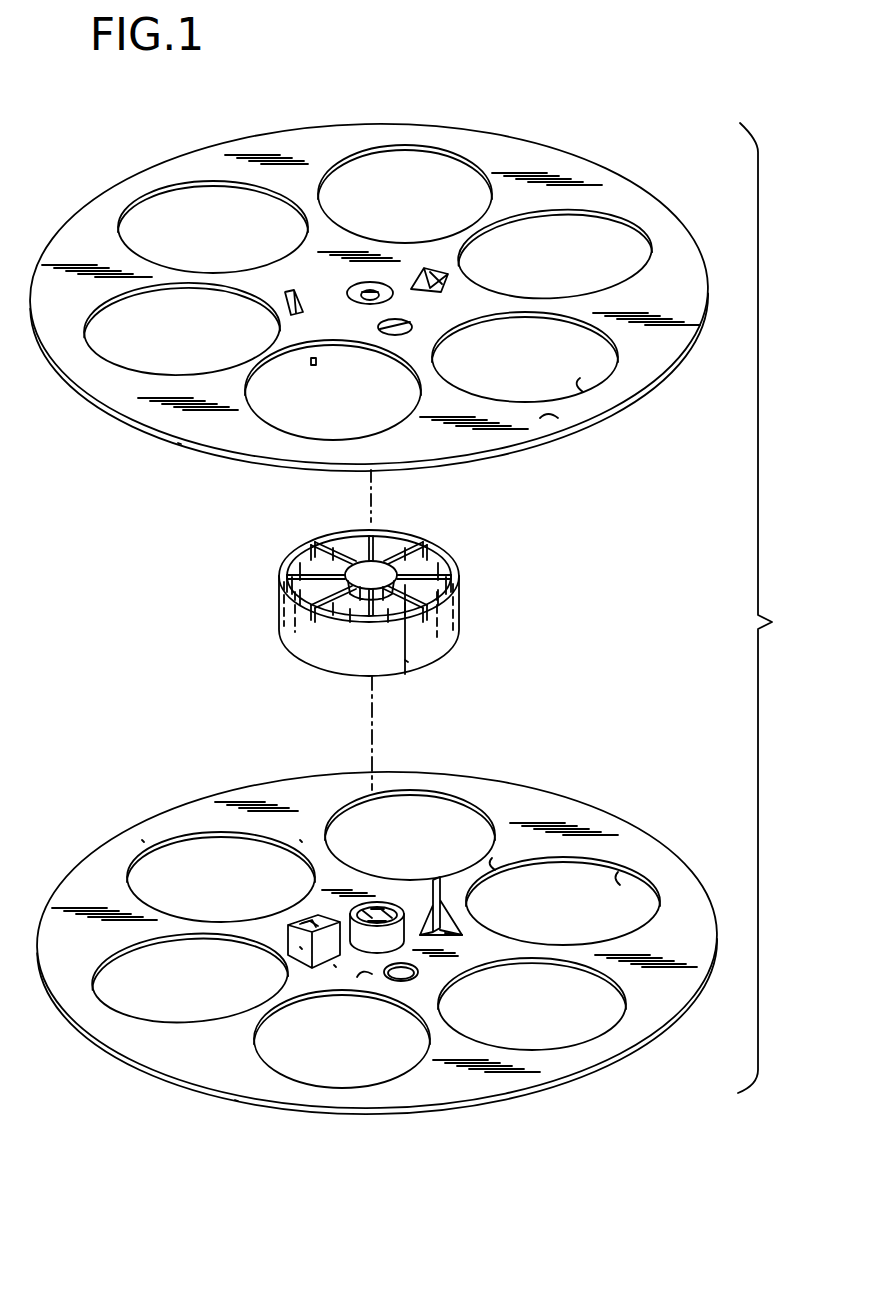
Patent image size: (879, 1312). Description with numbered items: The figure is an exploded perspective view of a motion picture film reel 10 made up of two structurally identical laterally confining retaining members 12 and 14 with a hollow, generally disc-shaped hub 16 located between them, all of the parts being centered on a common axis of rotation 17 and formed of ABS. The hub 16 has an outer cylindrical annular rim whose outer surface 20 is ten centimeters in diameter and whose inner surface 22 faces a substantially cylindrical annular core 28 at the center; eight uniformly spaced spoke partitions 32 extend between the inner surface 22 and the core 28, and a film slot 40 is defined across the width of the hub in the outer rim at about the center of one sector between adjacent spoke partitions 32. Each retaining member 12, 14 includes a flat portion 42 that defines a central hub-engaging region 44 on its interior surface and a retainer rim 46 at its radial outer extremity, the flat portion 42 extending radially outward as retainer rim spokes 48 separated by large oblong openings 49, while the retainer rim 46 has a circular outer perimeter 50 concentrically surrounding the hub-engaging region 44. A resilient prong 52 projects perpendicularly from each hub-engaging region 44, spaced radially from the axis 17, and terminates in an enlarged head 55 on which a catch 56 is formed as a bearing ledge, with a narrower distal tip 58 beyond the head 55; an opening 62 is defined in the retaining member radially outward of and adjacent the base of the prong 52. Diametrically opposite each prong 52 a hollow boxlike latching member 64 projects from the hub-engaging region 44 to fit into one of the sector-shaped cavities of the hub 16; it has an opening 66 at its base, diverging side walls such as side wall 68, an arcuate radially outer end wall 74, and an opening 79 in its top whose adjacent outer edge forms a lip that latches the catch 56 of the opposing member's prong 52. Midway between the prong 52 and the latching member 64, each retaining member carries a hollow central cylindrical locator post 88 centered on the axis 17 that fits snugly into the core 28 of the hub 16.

The motion picture film reel 10 is at (770, 608).
The laterally confining retaining member 12 is at (553, 126).
The laterally confining retaining member 14 is at (553, 775).
The hub 16 is at (398, 600).
The axis of rotation 17 is at (383, 722).
The outer surface 20 is at (455, 625).
The inner surface 22 is at (445, 560).
The core 28 is at (388, 555).
The spoke partitions 32 is at (312, 555).
The film slot 40 is at (405, 660).
The flat portion 42 is at (300, 840).
The hub-engaging region 44 is at (372, 974).
The retainer rim 46 is at (558, 418).
The retainer rim spokes 48 is at (495, 870).
The oblong openings 49 is at (583, 392).
The circular outer perimeter 50 is at (178, 443).
The resilient prong 52 is at (313, 369).
The head 55 is at (465, 907).
The catch 56 is at (490, 922).
The distal tip 58 is at (443, 885).
The opening 62 is at (292, 300).
The latching member 64 is at (427, 280).
The opening 66 is at (465, 276).
The side wall 68 is at (334, 965).
The radial outer end wall 74 is at (300, 947).
The opening 79 is at (305, 925).
The locator post 88 is at (369, 289).